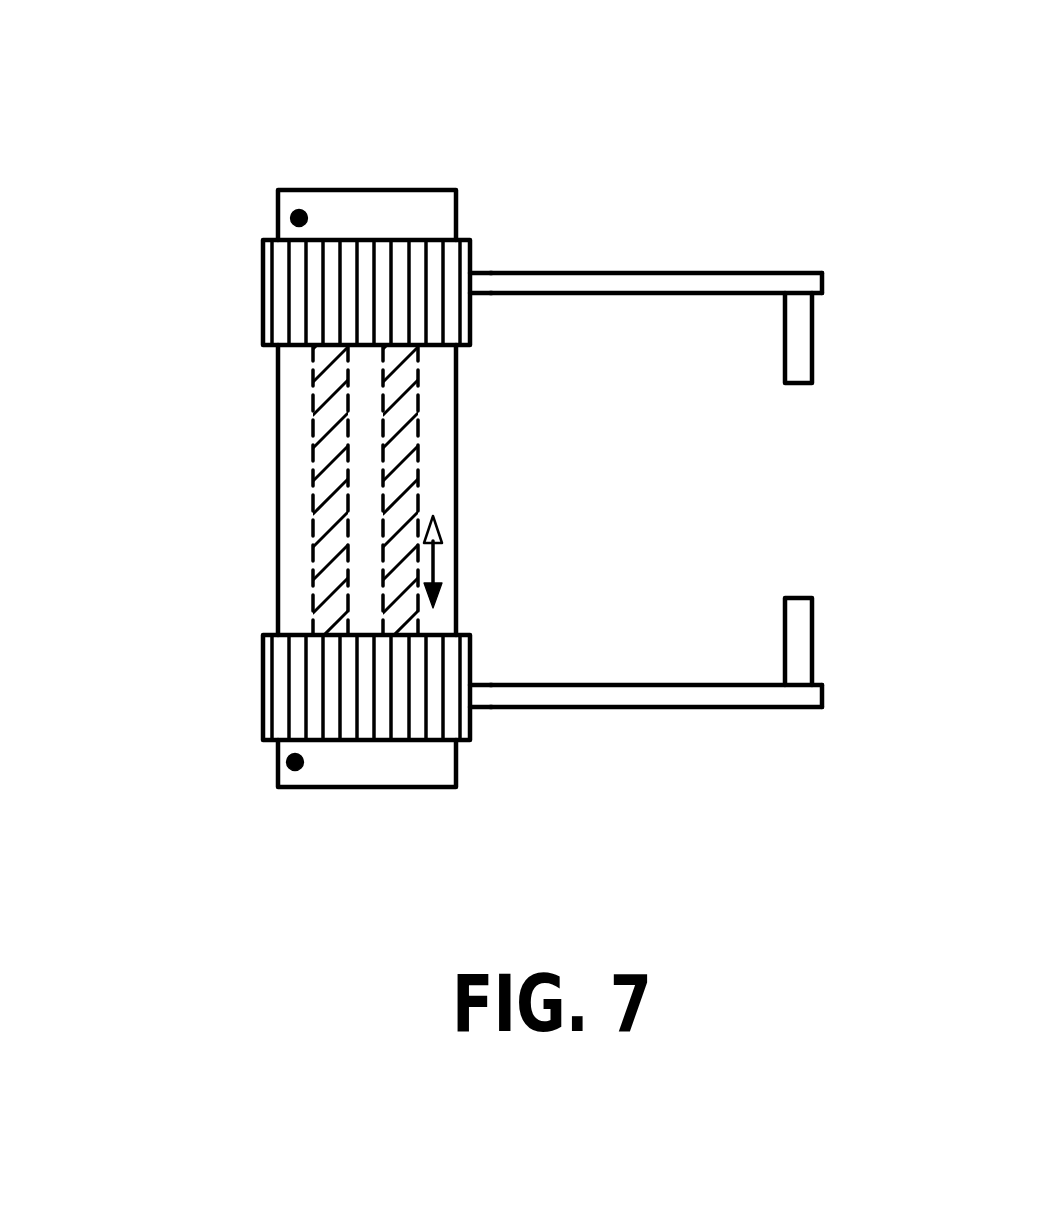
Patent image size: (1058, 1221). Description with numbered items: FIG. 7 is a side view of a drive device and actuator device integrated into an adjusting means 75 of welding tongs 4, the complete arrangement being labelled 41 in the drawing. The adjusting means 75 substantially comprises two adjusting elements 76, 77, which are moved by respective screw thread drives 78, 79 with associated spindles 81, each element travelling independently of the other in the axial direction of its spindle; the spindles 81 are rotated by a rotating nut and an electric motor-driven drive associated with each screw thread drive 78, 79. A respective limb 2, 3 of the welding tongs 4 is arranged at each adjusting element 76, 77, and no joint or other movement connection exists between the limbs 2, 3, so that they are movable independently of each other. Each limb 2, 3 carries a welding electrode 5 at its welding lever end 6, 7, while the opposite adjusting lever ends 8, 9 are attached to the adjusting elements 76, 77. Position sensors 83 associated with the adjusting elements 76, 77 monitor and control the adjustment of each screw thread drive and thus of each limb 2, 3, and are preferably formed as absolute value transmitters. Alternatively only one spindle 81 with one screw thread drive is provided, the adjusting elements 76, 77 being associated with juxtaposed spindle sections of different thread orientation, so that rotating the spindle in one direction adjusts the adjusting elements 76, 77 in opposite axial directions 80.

The actuator drive assembly 41 is at (902, 192).
The adjusting means 75 is at (214, 430).
The adjusting element 76 is at (437, 277).
The adjusting element 77 is at (433, 700).
The screw thread drive 78 is at (422, 436).
The screw thread drive 79 is at (303, 488).
The opposite axial directions 80 is at (436, 560).
The spindle 81 is at (307, 535).
The position sensor 83 is at (278, 206).
The limb 2 is at (643, 283).
The limb 3 is at (642, 697).
The welding tongs 4 is at (795, 697).
The welding electrode 5 is at (792, 283).
The welding lever end 6 is at (812, 643).
The welding lever end 7 is at (812, 338).
The adjusting lever end 8 is at (470, 297).
The adjusting lever end 9 is at (470, 683).